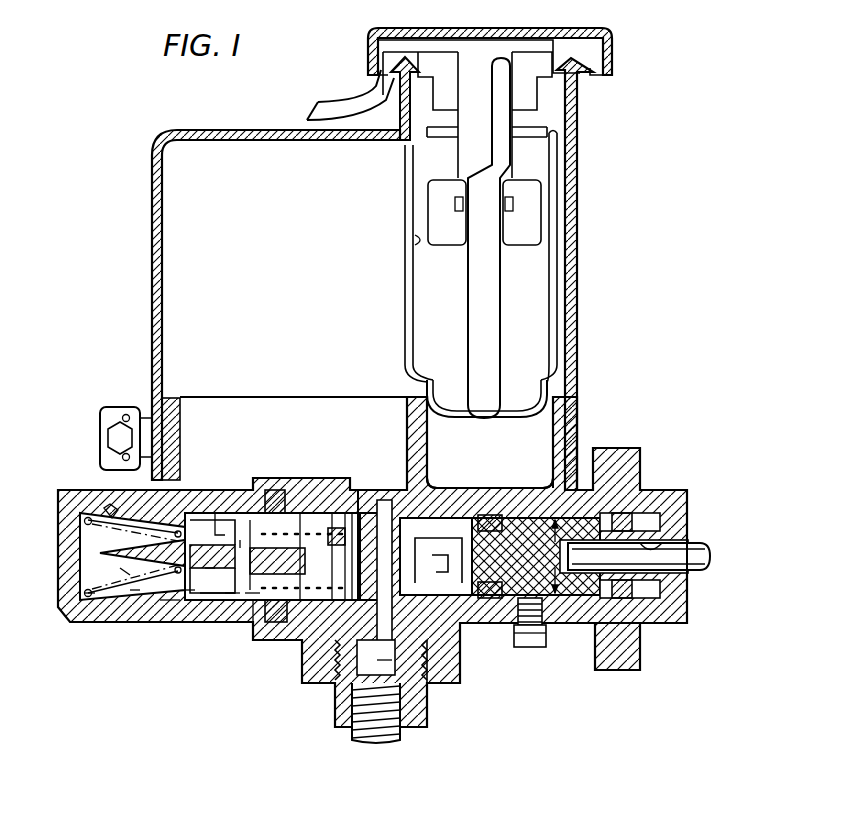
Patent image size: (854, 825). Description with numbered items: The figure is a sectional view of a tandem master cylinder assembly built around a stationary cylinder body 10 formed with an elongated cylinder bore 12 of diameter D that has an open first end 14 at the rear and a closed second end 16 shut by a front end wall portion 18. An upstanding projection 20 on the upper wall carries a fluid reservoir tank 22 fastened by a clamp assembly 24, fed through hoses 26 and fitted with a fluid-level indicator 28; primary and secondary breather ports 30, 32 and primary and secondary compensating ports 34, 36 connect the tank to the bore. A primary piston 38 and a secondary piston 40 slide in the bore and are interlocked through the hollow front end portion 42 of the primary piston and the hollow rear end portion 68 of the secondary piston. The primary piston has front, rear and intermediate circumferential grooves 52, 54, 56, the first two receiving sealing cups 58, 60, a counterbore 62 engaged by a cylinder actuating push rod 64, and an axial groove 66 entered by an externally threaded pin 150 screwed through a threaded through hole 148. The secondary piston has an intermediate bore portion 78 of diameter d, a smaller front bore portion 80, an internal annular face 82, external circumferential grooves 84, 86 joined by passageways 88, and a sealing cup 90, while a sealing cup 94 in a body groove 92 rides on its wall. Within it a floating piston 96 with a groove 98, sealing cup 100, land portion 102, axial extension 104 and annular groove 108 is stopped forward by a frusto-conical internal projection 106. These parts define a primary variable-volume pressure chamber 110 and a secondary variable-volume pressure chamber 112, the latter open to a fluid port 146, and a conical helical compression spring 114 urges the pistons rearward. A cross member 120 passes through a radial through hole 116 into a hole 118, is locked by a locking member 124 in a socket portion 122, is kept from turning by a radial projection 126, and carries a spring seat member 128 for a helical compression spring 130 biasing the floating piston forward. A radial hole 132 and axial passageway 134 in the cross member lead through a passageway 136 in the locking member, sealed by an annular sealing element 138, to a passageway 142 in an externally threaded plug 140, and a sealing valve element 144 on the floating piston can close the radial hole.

The cylinder body 10 is at (649, 486).
The cylinder bore 12 is at (447, 486).
The open first end 14 is at (684, 622).
The closed second end 16 is at (88, 598).
The front end wall portion 18 is at (58, 522).
The upstanding projection 20 is at (165, 395).
The fluid reservoir tank 22 is at (219, 130).
The clamp assembly 24 is at (104, 408).
The hoses 26 is at (330, 116).
The fluid-level indicator 28 is at (530, 170).
The primary breather port 30 is at (540, 518).
The secondary breather port 32 is at (232, 518).
The primary compensating port 34 is at (484, 518).
The secondary compensating port 36 is at (205, 512).
The primary piston 38 is at (530, 561).
The secondary piston 40 is at (282, 488).
The hollow front end portion 42 is at (430, 648).
The front circumferential groove 52 is at (490, 600).
The rear circumferential groove 54 is at (612, 640).
The intermediate circumferential groove 56 is at (598, 488).
The front sealing cup 58 is at (500, 612).
The rear sealing cup 60 is at (630, 640).
The counterbore 62 is at (665, 522).
The cylinder actuating push rod 64 is at (702, 544).
The axial groove 66 is at (578, 620).
The hollow rear end portion 68 is at (412, 536).
The intermediate bore portion 78 is at (278, 618).
The front bore portion 80 is at (192, 600).
The internal annular face 82 is at (230, 602).
The external circumferential groove 84 is at (212, 600).
The external circumferential groove 86 is at (250, 605).
The passageways 88 is at (238, 612).
The sealing cup 90 is at (216, 603).
The circumferential groove 92 is at (272, 628).
The sealing cup 94 is at (290, 645).
The floating piston 96 is at (277, 559).
The circumferential groove 98 is at (256, 518).
The sealing cup 100 is at (275, 489).
The land portion 102 is at (222, 512).
The axial extension 104 is at (163, 602).
The frusto-conical internal projection 106 is at (122, 580).
The annular groove 108 is at (320, 512).
The primary variable-volume pressure chamber 110 is at (340, 600).
The secondary variable-volume pressure chamber 112 is at (135, 600).
The conical helical compression spring 114 is at (96, 600).
The radial through hole 116 is at (432, 660).
The hole 118 is at (388, 488).
The cross member 120 is at (355, 512).
The internally threaded socket portion 122 is at (318, 690).
The locking member 124 is at (335, 705).
The radial projection 126 is at (325, 700).
The spring seat member 128 is at (345, 512).
The helical compression spring 130 is at (332, 512).
The radial hole 132 is at (378, 545).
The axial passageway 134 is at (378, 580).
The passageway 136 is at (345, 700).
The annular sealing element 138 is at (420, 690).
The externally threaded plug 140 is at (374, 746).
The passageway 142 is at (392, 700).
The sealing valve element 144 is at (303, 558).
The fluid port 146 is at (108, 508).
The threaded through hole 148 is at (528, 648).
The externally threaded pin 150 is at (540, 648).
The diameter of intermediate bore portion d is at (238, 553).
The diameter of cylinder bore D is at (555, 556).